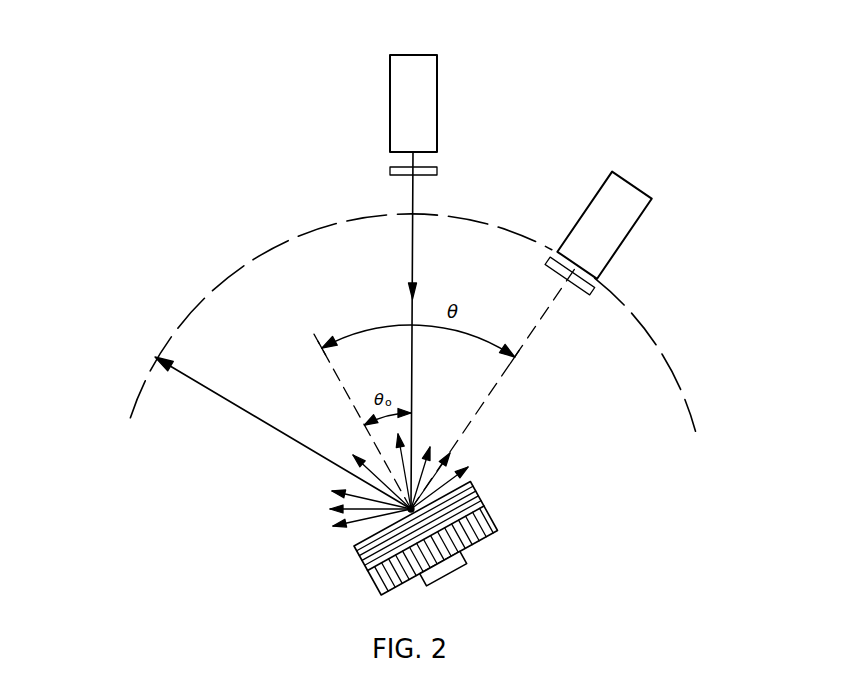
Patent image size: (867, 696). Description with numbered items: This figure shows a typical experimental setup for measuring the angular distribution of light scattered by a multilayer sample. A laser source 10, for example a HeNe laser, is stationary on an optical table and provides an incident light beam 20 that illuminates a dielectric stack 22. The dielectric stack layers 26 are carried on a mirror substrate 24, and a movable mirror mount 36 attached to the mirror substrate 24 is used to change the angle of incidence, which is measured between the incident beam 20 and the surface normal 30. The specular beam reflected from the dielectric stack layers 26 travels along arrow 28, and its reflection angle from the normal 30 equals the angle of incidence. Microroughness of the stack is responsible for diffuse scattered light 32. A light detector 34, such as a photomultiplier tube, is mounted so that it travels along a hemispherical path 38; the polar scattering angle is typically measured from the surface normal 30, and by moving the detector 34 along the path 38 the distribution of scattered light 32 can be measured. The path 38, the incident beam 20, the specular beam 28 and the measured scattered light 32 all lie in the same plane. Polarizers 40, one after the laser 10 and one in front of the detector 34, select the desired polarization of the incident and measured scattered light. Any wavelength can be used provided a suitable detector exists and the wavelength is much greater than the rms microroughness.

The laser source 10 is at (437, 68).
The polarizers 40 is at (437, 172).
The incident light beam 20 is at (411, 270).
The dielectric stack 22 is at (455, 541).
The mirror substrate 24 is at (481, 541).
The dielectric stack layers 26 is at (479, 497).
The specular beam 28 is at (229, 401).
The surface normal 30 is at (337, 403).
The diffuse scattered light 32 is at (465, 426).
The light detector 34 is at (557, 295).
The movable mirror mount 36 is at (441, 579).
The hemispherical path 38 is at (130, 418).